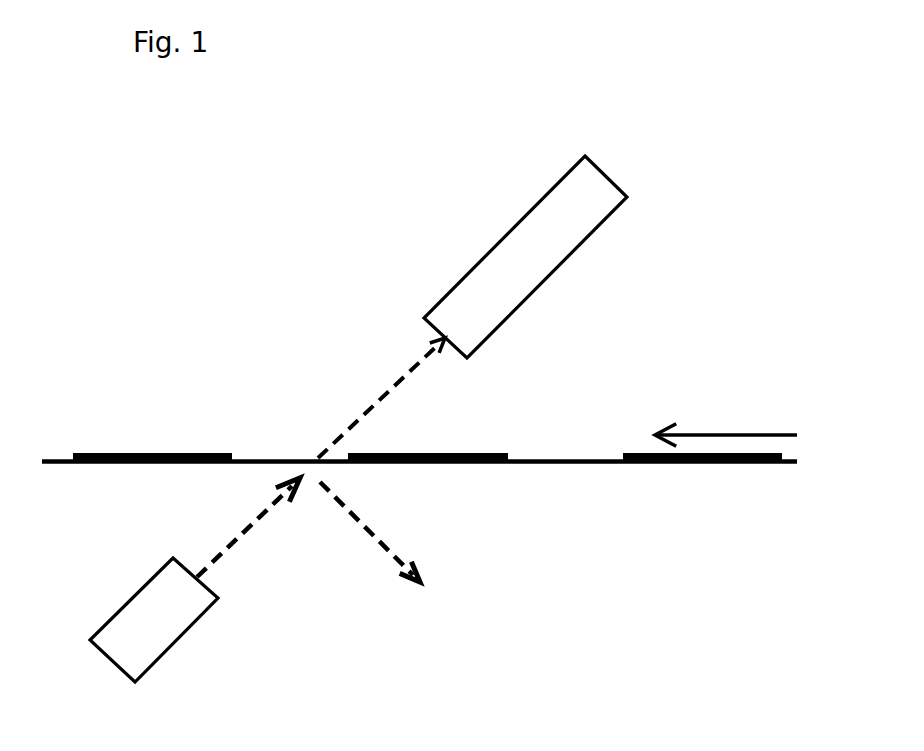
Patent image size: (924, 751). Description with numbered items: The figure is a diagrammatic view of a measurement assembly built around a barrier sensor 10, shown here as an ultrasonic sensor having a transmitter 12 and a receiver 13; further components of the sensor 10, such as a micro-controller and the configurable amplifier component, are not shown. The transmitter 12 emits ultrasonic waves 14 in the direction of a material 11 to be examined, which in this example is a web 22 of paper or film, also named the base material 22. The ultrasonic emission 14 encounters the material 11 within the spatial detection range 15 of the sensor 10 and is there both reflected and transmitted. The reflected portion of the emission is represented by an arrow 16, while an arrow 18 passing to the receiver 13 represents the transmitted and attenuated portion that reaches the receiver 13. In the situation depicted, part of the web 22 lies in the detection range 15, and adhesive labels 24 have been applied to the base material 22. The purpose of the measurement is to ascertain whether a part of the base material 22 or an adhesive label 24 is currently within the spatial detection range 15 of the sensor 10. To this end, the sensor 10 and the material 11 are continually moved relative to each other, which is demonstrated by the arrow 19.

The barrier sensor 10 is at (348, 187).
The material 11 is at (688, 482).
The transmitter 12 is at (164, 628).
The receiver 13 is at (536, 269).
The ultrasonic waves 14 is at (253, 530).
The spatial detection range 15 is at (315, 455).
The arrow representing reflected portion 16 is at (380, 533).
The arrow representing transmitted portion 18 is at (365, 413).
The arrow indicating relative movement 19 is at (738, 430).
The web of paper or film 22 is at (560, 465).
The adhesive labels 24 is at (121, 452).